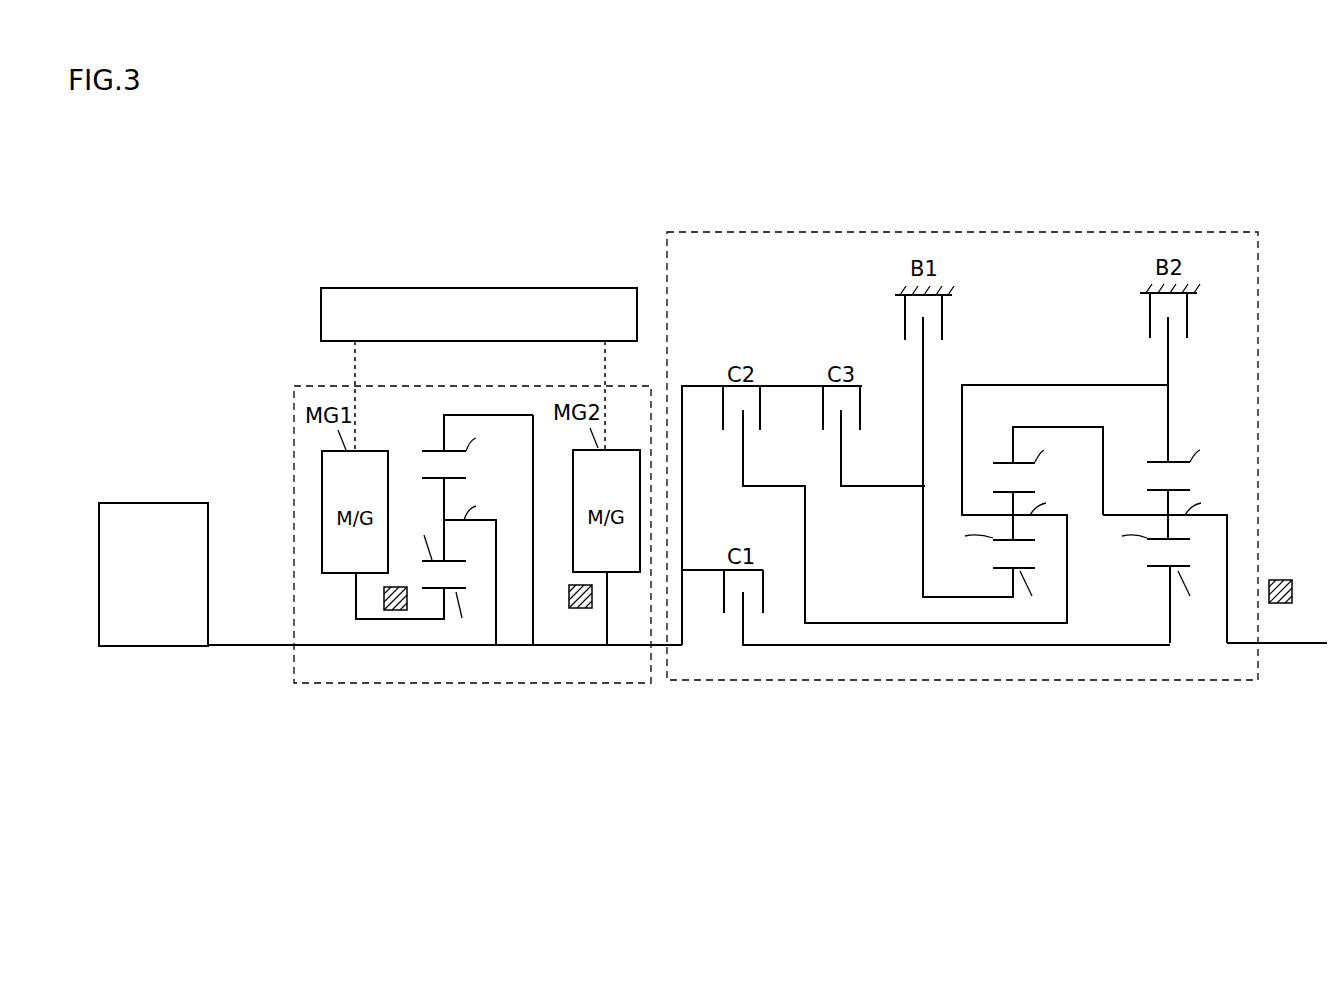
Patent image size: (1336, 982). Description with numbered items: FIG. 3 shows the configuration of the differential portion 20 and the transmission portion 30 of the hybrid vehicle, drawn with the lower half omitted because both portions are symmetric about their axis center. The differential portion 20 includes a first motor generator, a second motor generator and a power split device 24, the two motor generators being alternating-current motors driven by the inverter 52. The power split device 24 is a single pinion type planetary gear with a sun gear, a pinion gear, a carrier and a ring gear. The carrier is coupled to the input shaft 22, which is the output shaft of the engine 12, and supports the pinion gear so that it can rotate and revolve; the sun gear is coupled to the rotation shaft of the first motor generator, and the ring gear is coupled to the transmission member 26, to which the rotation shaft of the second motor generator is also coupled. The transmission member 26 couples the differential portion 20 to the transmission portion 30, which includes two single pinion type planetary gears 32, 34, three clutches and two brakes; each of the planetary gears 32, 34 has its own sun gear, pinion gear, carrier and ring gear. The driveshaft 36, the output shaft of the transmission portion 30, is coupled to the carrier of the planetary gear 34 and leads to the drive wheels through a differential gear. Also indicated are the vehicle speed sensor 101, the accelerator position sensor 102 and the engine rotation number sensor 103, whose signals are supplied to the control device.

The engine 12 is at (172, 503).
The differential portion 20 is at (535, 386).
The input shaft 22 is at (255, 646).
The power split device 24 is at (443, 654).
The transmission member 26 is at (633, 646).
The transmission portion 30 is at (1198, 230).
The planetary gear 32 is at (1023, 652).
The planetary gear 34 is at (1183, 652).
The driveshaft 36 is at (1290, 638).
The inverter 52 is at (592, 287).
The vehicle speed sensor 101 is at (398, 610).
The accelerator position sensor 102 is at (582, 608).
The engine rotation number sensor 103 is at (1280, 580).